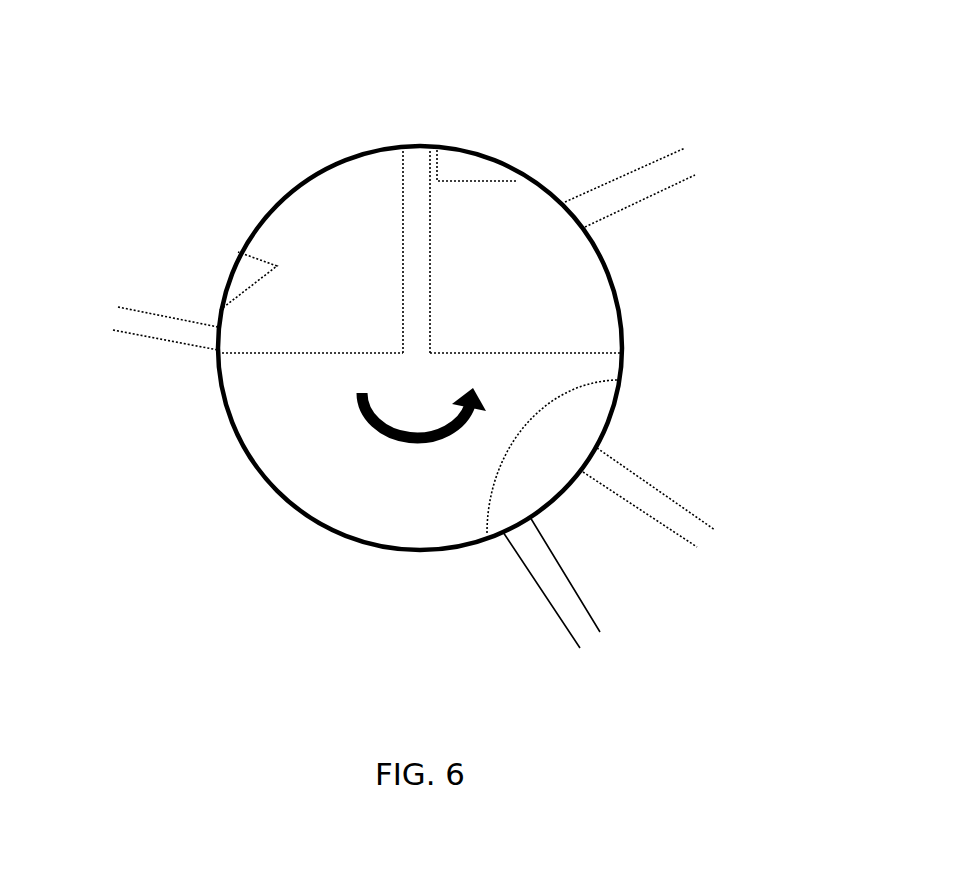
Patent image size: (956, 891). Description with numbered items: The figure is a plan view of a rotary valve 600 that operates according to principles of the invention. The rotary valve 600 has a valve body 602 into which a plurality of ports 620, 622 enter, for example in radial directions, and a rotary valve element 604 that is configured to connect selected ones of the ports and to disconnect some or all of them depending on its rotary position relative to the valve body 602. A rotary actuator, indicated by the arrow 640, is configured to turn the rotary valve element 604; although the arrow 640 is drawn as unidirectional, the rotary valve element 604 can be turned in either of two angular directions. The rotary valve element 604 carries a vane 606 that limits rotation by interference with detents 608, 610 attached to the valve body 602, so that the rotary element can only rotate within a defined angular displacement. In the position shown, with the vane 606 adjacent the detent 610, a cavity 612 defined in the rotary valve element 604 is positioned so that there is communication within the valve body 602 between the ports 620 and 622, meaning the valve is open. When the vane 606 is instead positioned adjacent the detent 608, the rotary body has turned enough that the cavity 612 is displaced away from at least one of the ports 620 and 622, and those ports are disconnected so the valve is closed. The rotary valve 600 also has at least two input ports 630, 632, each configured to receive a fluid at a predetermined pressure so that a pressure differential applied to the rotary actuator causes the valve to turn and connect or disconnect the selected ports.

The rotary valve 600 is at (177, 128).
The valve body 602 is at (630, 298).
The rotary valve element 604 is at (563, 367).
The vane 606 is at (417, 186).
The detent 608 is at (252, 267).
The detent 610 is at (458, 163).
The cavity 612 is at (570, 430).
The port 620 is at (720, 547).
The port 622 is at (615, 628).
The input port 630 is at (652, 150).
The input port 632 is at (145, 295).
The rotary actuator arrow 640 is at (390, 450).